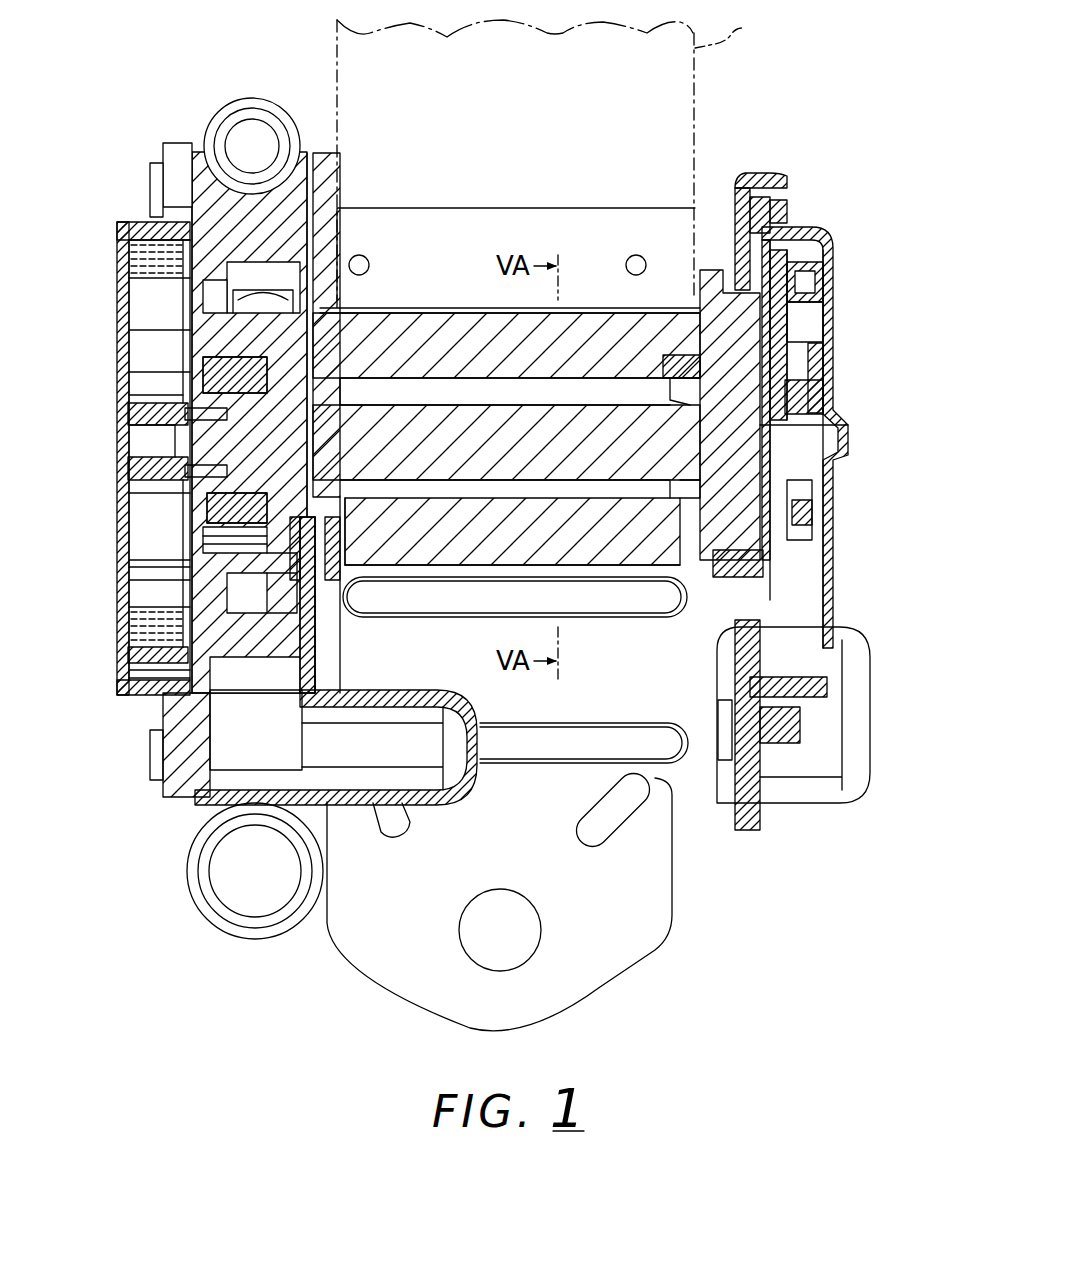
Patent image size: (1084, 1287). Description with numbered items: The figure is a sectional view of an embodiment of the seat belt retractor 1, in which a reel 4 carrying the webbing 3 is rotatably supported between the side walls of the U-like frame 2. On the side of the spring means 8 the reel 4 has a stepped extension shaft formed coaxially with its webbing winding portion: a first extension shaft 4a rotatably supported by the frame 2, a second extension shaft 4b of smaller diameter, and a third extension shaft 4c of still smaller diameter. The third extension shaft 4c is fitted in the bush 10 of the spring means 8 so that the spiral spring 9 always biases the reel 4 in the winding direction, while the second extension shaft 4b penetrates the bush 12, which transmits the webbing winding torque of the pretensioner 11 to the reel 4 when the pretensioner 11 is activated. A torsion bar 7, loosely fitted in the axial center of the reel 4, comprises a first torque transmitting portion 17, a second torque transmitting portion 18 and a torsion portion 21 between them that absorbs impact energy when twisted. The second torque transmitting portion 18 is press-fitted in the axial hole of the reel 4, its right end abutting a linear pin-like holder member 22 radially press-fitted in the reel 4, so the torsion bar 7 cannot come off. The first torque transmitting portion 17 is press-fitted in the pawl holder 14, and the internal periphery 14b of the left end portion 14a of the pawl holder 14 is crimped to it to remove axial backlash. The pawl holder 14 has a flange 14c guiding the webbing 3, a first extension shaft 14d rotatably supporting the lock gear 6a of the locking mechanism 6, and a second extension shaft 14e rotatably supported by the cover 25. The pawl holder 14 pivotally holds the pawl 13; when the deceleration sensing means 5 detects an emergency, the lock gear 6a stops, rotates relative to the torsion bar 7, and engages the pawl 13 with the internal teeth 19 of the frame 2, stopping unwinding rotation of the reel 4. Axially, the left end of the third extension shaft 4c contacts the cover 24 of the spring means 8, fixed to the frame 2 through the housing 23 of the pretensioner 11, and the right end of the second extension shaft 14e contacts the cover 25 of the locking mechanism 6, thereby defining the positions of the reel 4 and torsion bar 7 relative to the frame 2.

The seat belt retractor 1 is at (822, 90).
The frame 2 is at (676, 782).
The webbing 3 is at (547, 156).
The reel 4 is at (430, 327).
The first extension shaft 4a is at (210, 697).
The second extension shaft 4b is at (205, 505).
The third extension shaft 4c is at (160, 442).
The deceleration sensing means 5 is at (825, 792).
The locking mechanism 6 is at (824, 380).
The lock gear 6a is at (790, 240).
The torsion bar 7 is at (498, 400).
The spring means 8 is at (110, 662).
The spiral spring 9 is at (150, 270).
The bush 10 is at (185, 483).
The pretensioner 11 is at (237, 780).
The bush 12 is at (215, 355).
The pawl 13 is at (748, 565).
The pawl holder 14 is at (740, 345).
The left end portion 14a is at (693, 417).
The internal periphery 14b is at (660, 403).
The flange 14c is at (712, 285).
The first extension shaft 14d is at (822, 414).
The second extension shaft 14e is at (833, 437).
The first torque transmitting portion 17 is at (673, 357).
The second torque transmitting portion 18 is at (362, 380).
The internal teeth 19 is at (747, 610).
The torsion portion 21 is at (456, 427).
The holder member 22 is at (385, 527).
The housing 23 is at (190, 180).
The cover 24 is at (122, 345).
The cover 25 is at (830, 300).